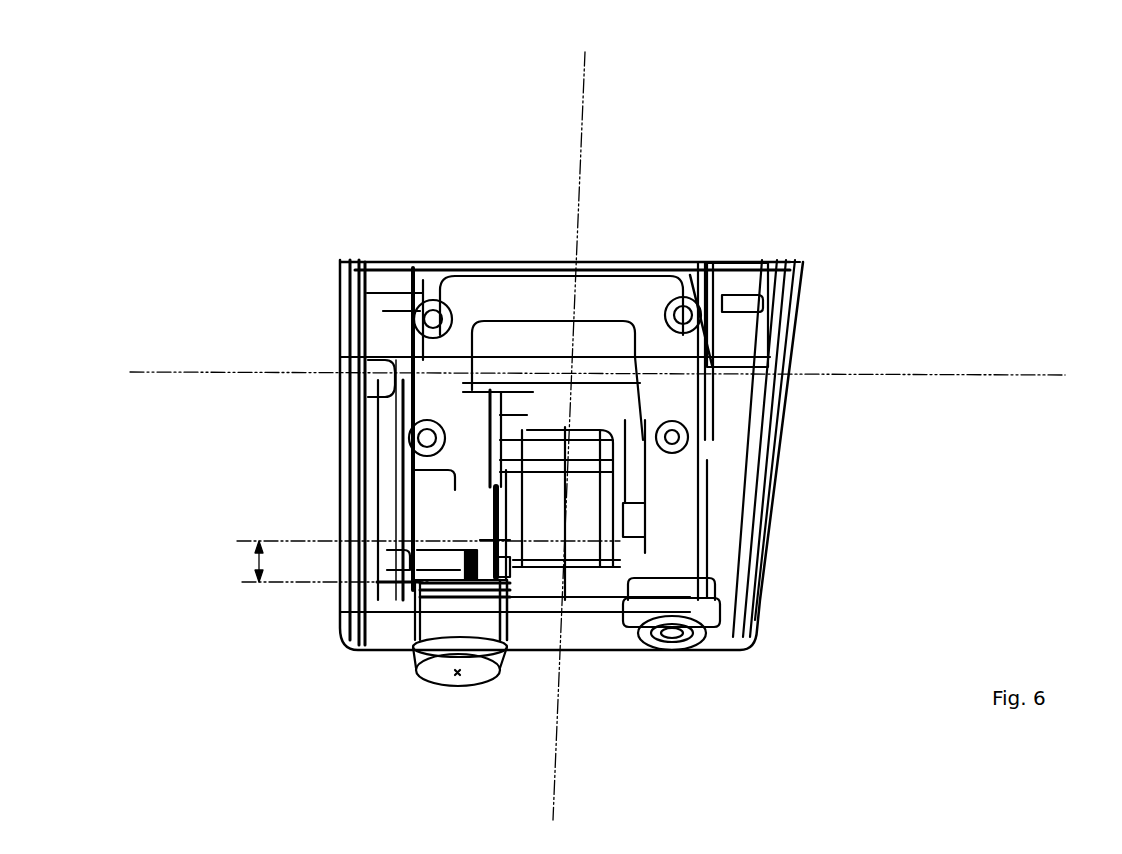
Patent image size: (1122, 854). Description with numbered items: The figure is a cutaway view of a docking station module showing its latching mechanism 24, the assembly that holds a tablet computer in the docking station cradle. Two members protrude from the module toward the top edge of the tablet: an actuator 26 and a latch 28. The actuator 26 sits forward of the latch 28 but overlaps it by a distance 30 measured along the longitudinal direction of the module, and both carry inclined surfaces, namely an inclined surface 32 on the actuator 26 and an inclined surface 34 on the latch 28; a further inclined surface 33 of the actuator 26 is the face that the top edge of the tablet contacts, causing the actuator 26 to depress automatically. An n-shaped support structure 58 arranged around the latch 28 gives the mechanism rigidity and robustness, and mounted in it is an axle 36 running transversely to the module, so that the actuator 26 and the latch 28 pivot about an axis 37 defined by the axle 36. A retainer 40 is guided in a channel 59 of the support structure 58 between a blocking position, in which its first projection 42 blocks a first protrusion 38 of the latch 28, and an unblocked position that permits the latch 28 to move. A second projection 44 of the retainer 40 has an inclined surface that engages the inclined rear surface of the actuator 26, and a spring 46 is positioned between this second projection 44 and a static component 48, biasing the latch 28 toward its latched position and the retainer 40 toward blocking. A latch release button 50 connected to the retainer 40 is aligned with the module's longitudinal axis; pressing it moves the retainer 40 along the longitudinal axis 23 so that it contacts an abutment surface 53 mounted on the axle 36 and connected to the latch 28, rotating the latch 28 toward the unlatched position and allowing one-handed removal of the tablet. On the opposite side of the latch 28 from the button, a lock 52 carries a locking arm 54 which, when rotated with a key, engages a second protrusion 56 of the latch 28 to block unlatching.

The longitudinal axis 23 is at (585, 54).
The latching mechanism 24 is at (793, 176).
The actuator 26 is at (455, 545).
The latch 28 is at (600, 490).
The distance 30 is at (256, 560).
The inclined surface 32 is at (470, 555).
The inclined surface 33 is at (470, 578).
The inclined surface 34 is at (612, 545).
The axle 36 is at (740, 368).
The axis 37 is at (862, 372).
The first protrusion 38 is at (503, 493).
The retainer 40 is at (505, 600).
The first projection 42 is at (512, 462).
The second projection 44 is at (430, 567).
The spring 46 is at (470, 542).
The static component 48 is at (430, 503).
The latch release button 50 is at (443, 683).
The lock 52 is at (697, 650).
The abutment surface 53 is at (490, 385).
The locking arm 54 is at (645, 540).
The second protrusion 56 is at (640, 520).
The support structure 58 is at (635, 308).
The channel 59 is at (470, 547).